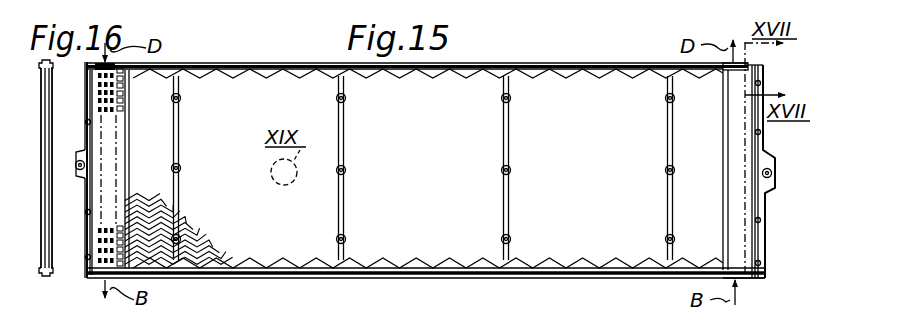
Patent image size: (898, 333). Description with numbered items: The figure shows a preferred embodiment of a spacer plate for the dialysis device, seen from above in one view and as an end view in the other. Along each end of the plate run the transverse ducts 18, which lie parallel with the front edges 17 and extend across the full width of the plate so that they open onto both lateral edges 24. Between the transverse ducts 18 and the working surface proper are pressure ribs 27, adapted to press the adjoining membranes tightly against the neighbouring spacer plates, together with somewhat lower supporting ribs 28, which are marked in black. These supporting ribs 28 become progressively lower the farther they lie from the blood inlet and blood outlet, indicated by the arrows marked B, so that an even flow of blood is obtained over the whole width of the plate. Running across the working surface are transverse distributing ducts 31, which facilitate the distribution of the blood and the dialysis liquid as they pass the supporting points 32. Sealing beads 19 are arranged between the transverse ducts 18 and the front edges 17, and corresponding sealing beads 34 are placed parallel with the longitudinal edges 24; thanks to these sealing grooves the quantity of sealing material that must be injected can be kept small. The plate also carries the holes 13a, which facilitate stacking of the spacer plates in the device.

The holes facilitating stacking 13a is at (80, 160).
The front edges 17 is at (86, 200).
The transverse ducts 18 is at (98, 85).
The sealing beads 19 is at (90, 240).
The lateral edges 24 is at (330, 63).
The pressure ribs 27 is at (118, 113).
The supporting ribs 28 is at (118, 97).
The transverse distributing ducts 31 is at (180, 155).
The supporting points 32 is at (181, 98).
The sealing beads 34 is at (463, 63).